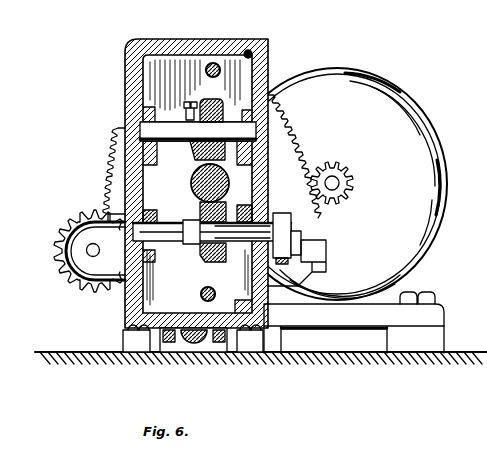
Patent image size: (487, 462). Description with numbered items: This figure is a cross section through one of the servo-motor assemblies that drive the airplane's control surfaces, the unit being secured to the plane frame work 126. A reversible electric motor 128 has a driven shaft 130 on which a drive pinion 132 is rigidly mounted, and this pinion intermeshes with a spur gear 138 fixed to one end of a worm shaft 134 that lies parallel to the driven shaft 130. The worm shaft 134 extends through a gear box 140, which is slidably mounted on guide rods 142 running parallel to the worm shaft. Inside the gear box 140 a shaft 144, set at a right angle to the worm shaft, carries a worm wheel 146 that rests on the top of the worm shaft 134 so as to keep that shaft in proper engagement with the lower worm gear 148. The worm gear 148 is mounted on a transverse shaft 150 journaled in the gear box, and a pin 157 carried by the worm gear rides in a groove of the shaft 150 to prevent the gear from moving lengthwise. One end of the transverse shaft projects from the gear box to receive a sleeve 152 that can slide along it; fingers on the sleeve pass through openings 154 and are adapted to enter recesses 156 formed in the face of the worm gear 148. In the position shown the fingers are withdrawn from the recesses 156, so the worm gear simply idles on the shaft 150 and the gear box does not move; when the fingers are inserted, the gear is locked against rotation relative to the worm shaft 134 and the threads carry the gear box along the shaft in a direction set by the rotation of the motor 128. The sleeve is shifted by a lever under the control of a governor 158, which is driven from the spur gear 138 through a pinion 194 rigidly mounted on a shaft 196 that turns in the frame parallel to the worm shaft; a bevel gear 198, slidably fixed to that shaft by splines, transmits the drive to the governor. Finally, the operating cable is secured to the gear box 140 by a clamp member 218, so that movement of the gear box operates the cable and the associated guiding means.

The plane frame work 126 is at (325, 361).
The reversible electric motor 128 is at (428, 228).
The driven shaft 130 is at (340, 183).
The drive pinion 132 is at (351, 192).
The worm shaft 134 is at (193, 179).
The spur gear 138 is at (111, 177).
The gear box 140 is at (218, 39).
The guide rods 142 is at (250, 50).
The shaft 144 is at (126, 125).
The worm wheel 146 is at (205, 104).
The worm gear 148 is at (201, 294).
The transverse shaft 150 is at (112, 209).
The sleeve 152 is at (288, 227).
The openings 154 is at (258, 214).
The recesses 156 is at (260, 188).
The pin 157 is at (196, 260).
The governor 158 is at (260, 201).
The pinion 194 is at (67, 273).
The shaft 196 is at (86, 250).
The bevel gear 198 is at (75, 228).
The clamp member 218 is at (191, 352).